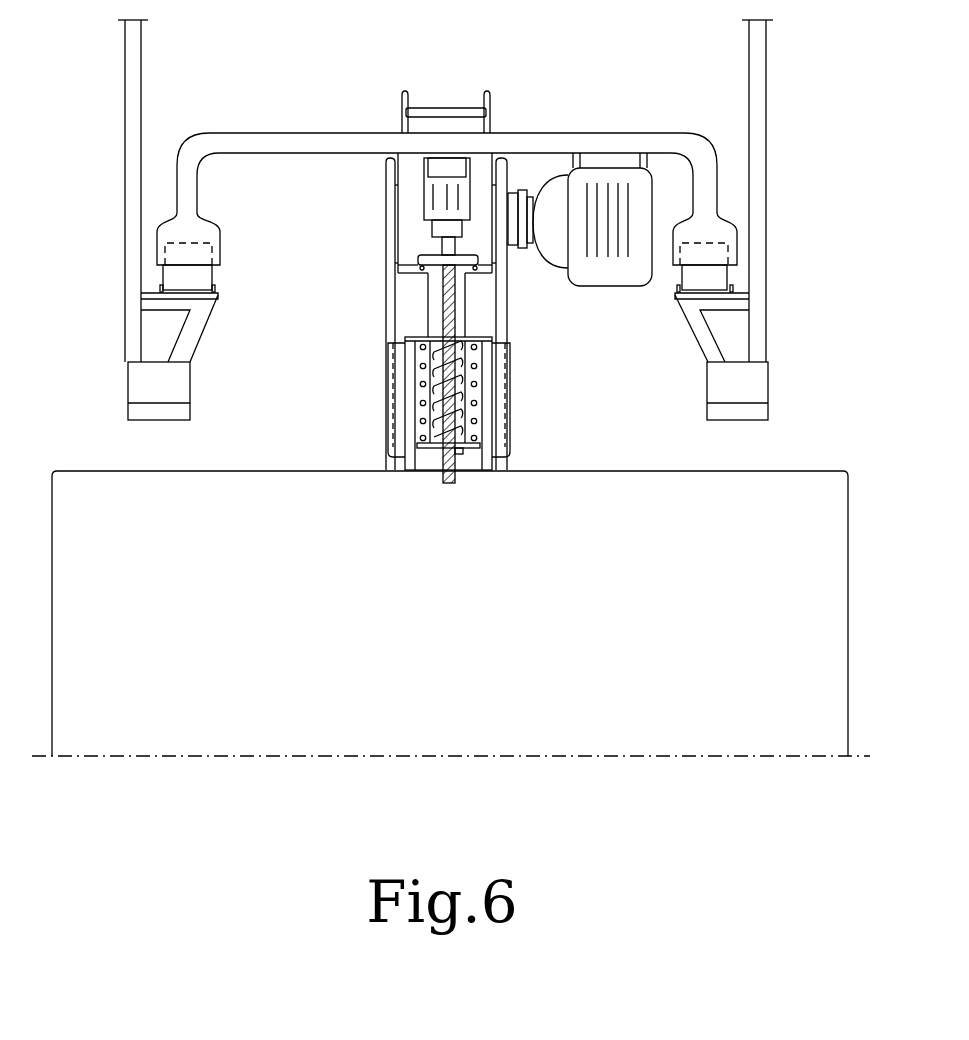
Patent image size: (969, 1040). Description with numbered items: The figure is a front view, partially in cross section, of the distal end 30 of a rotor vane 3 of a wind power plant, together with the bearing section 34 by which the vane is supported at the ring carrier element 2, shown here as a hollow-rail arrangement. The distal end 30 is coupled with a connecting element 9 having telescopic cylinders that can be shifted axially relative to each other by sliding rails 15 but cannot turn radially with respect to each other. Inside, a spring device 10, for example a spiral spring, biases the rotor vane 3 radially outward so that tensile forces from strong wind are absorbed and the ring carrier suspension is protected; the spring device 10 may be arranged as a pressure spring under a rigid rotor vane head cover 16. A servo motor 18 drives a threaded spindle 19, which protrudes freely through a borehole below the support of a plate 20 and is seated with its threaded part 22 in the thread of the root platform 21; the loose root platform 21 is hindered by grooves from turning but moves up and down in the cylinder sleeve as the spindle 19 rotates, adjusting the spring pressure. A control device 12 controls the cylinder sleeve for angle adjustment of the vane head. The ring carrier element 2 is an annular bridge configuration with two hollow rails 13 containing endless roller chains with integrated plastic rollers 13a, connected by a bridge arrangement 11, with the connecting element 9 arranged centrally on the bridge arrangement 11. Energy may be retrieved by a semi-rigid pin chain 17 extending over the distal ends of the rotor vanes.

The ring carrier element 2 is at (133, 52).
The rotor vane 3 is at (158, 703).
The connecting element 9 is at (512, 407).
The spring device 10 is at (438, 350).
The bridge arrangement 11 is at (583, 148).
The control device 12 is at (627, 207).
The hollow rail 13 is at (158, 301).
The plastic roller 13a is at (183, 278).
The sliding rail 15 is at (397, 427).
The rotor vane head cover 16 is at (475, 337).
The semi-rigid pin chain 17 is at (438, 107).
The servo motor 18 is at (442, 198).
The threaded spindle 19 is at (445, 313).
The plate 20 is at (420, 258).
The root platform 21 is at (428, 450).
The threaded part 22 is at (458, 392).
The distal end 30 is at (120, 498).
The bearing section 34 is at (638, 404).